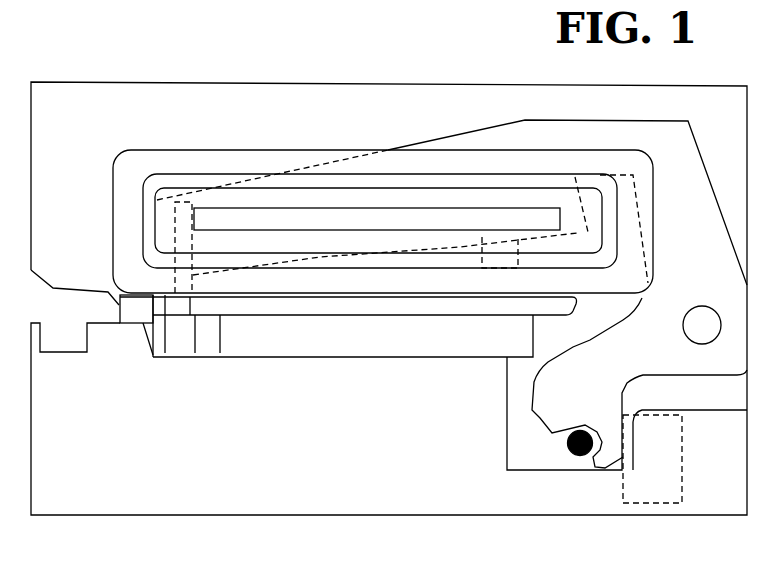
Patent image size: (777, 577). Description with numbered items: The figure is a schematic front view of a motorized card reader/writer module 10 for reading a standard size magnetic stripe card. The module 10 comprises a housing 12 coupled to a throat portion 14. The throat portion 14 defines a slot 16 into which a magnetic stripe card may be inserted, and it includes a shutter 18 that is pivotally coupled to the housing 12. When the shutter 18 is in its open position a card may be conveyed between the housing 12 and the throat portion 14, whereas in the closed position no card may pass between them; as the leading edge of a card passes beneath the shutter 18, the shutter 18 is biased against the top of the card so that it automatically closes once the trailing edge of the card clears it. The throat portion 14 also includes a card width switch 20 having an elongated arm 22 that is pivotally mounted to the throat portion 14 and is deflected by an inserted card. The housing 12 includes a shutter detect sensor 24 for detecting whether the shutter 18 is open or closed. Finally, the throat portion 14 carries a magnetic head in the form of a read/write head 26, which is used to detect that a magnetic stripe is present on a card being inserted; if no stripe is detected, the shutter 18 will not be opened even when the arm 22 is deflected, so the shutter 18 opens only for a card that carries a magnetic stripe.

The motorized card reader/writer module 10 is at (110, 46).
The housing 12 is at (343, 82).
The throat portion 14 is at (190, 150).
The slot 16 is at (308, 217).
The shutter 18 is at (467, 131).
The card width switch 20 is at (165, 224).
The elongated arm 22 is at (135, 313).
The shutter detect sensor 24 is at (662, 487).
The read/write head 26 is at (487, 272).